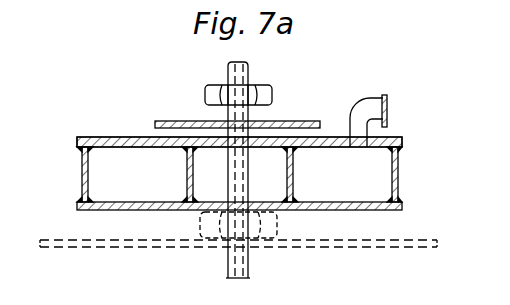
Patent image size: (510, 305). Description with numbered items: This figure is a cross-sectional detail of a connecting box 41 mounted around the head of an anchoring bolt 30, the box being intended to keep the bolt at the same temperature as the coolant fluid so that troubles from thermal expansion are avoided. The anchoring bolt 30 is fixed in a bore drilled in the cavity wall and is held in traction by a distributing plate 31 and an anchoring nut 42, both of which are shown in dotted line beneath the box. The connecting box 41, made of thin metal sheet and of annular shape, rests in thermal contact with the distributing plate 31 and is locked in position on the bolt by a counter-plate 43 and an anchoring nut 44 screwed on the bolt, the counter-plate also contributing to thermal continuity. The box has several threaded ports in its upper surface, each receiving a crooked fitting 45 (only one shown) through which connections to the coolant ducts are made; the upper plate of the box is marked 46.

The anchoring bolt 30 is at (248, 267).
The distributing plate 31 is at (70, 240).
The connecting box 41 is at (398, 190).
The anchoring nut 42 is at (277, 222).
The counter-plate 43 is at (173, 121).
The anchoring nut 44 is at (272, 96).
The crooked fitting 45 is at (388, 108).
The top plate 46 is at (117, 137).